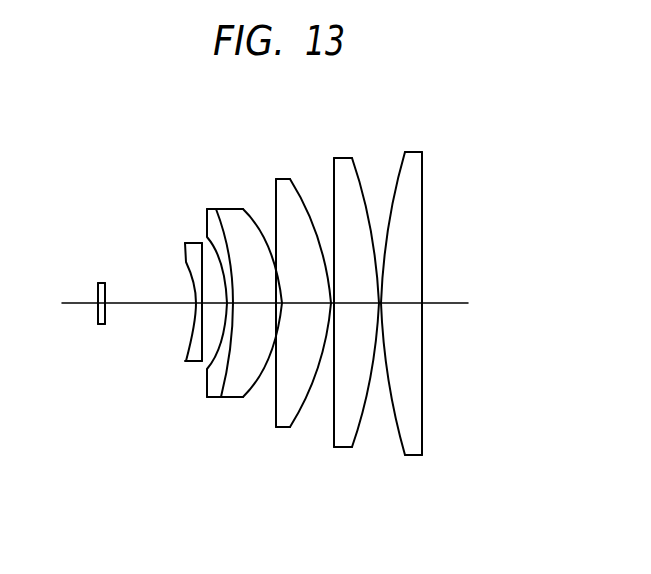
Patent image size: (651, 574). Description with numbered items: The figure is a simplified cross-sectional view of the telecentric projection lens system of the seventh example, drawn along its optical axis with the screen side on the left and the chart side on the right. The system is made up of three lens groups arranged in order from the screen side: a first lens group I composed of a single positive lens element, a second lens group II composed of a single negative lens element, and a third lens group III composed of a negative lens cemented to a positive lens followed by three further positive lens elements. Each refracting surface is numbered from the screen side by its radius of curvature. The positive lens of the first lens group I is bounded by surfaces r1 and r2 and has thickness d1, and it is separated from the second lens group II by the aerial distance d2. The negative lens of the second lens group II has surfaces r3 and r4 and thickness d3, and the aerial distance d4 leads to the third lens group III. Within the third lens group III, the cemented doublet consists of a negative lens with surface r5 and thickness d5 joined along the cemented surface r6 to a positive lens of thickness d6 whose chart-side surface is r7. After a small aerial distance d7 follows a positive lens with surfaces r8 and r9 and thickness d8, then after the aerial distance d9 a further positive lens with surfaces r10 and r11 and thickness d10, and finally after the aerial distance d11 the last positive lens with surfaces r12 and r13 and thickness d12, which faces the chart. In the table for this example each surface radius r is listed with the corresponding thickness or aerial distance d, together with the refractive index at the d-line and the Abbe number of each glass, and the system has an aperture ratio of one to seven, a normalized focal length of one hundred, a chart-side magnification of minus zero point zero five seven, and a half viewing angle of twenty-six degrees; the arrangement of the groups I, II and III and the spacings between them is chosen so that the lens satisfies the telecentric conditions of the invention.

The radius of curvature of surface one r1 is at (98, 283).
The radius of curvature of surface two r2 is at (106, 283).
The radius of curvature of surface three r3 is at (186, 262).
The radius of curvature of surface four r4 is at (195, 242).
The radius of curvature of surface five r5 is at (213, 209).
The radius of curvature of surface six r6 is at (226, 209).
The radius of curvature of surface seven r7 is at (260, 231).
The radius of curvature of surface eight r8 is at (276, 199).
The radius of curvature of surface nine r9 is at (292, 180).
The radius of curvature of surface ten r10 is at (334, 185).
The radius of curvature of surface eleven r11 is at (355, 168).
The radius of curvature of surface twelve r12 is at (407, 153).
The radius of curvature of surface thirteen r13 is at (423, 178).
The thickness of first lens d1 is at (98, 324).
The aerial distance between first and second lens d2 is at (145, 303).
The thickness of second lens d3 is at (187, 361).
The aerial distance between second and third lens d4 is at (207, 397).
The thickness of negative lens of cemented doublet d5 is at (255, 303).
The thickness of positive lens of cemented doublet d6 is at (262, 377).
The aerial distance after cemented doublet d7 is at (312, 303).
The thickness of first single positive lens of third group d8 is at (316, 367).
The aerial distance between positive lenses d9 is at (360, 303).
The thickness of second single positive lens of third group d10 is at (388, 380).
The aerial distance before last lens d11 is at (381, 310).
The thickness of last positive lens d12 is at (403, 303).
The first lens group I is at (80, 499).
The second lens group II is at (175, 499).
The third lens group III is at (527, 499).